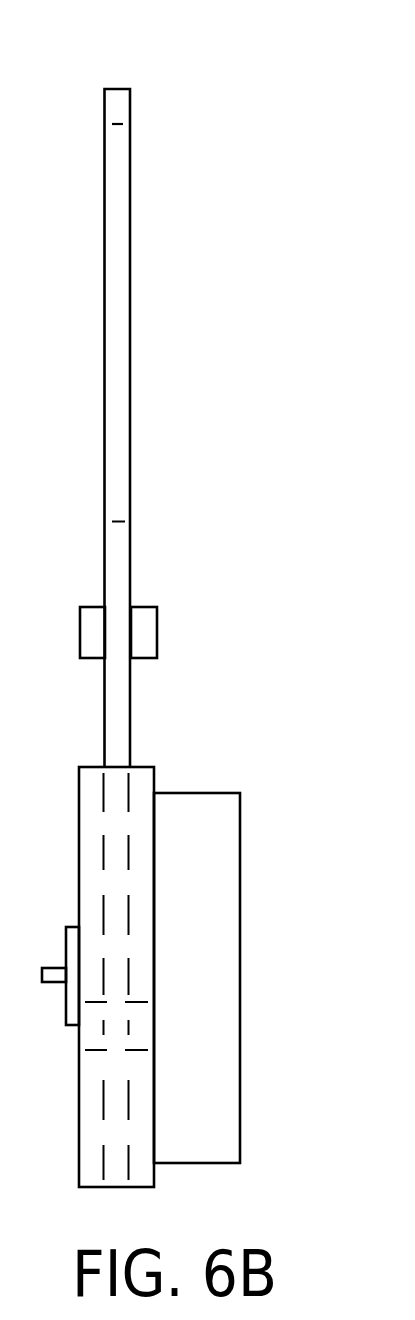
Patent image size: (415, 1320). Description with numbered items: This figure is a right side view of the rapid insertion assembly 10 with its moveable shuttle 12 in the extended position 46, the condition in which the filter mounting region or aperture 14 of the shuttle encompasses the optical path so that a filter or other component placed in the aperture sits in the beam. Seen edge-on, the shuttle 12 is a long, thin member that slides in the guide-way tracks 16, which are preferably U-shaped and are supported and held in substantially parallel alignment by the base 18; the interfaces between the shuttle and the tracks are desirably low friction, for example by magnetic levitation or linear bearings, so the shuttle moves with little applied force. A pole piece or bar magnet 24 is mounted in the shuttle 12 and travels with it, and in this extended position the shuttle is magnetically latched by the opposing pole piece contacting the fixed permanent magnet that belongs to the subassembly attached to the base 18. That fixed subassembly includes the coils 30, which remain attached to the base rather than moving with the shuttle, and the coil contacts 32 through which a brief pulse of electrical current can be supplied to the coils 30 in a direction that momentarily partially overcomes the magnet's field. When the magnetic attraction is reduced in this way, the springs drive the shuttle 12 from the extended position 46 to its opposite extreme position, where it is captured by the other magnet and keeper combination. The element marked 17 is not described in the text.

The rapid insertion assembly 10 is at (158, 250).
The extended position 46 is at (45, 258).
The moveable shuttle 12 is at (104, 446).
The filter mounting region or aperture 14 is at (120, 358).
The marking 17 is at (120, 520).
The pole piece or bar magnet 24 is at (80, 628).
The guide-way tracks 16 is at (79, 790).
The base 18 is at (221, 934).
The coils 30 is at (66, 935).
The coil contacts 32 is at (45, 986).